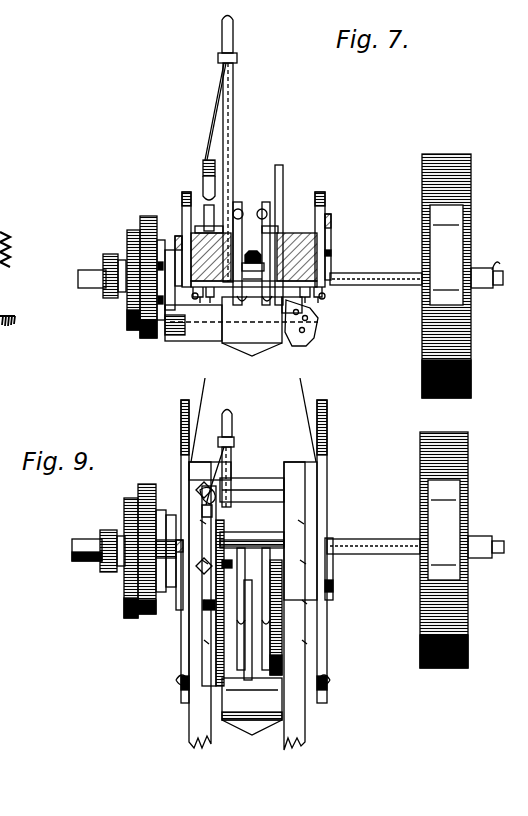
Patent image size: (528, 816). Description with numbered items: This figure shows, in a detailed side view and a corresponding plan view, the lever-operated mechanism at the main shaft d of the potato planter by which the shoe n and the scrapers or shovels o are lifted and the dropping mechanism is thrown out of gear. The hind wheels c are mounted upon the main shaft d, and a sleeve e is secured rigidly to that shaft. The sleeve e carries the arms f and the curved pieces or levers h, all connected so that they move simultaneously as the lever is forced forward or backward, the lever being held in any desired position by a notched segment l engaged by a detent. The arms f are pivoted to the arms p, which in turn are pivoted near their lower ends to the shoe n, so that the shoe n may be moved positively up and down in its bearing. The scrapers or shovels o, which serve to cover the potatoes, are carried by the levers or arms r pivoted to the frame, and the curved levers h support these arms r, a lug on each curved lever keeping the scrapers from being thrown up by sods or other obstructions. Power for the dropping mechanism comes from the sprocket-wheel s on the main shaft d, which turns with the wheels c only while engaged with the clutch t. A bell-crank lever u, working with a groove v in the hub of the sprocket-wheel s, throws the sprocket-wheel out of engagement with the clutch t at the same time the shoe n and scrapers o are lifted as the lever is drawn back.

In FIG. 7, the hind wheels c is at (446, 276).
In FIG. 9, the hind wheels c is at (444, 550).
In FIG. 7, the main shaft d is at (398, 278).
In FIG. 9, the main shaft d is at (88, 540).
In FIG. 7, the clutch t is at (110, 262).
In FIG. 9, the clutch t is at (106, 570).
In FIG. 7, the sprocket-wheel s is at (130, 318).
In FIG. 9, the sprocket-wheel s is at (142, 492).
In FIG. 7, the bell-crank lever u is at (150, 340).
In FIG. 7, the groove v is at (166, 271).
In FIG. 9, the groove v is at (158, 590).
In FIG. 7, the curved pieces or levers h is at (177, 236).
In FIG. 9, the curved pieces or levers h is at (180, 592).
In FIG. 7, the levers or arms r is at (184, 194).
In FIG. 9, the levers or arms r is at (184, 662).
In FIG. 7, the frame bar a is at (318, 262).
In FIG. 9, the frame bar a is at (253, 606).
In FIG. 7, the segment l is at (216, 210).
In FIG. 9, the segment l is at (214, 540).
In FIG. 7, the shoe n is at (241, 326).
In FIG. 9, the shoe n is at (252, 706).
In FIG. 7, the scrapers or shovels o is at (318, 326).
In FIG. 9, the scrapers or shovels o is at (203, 392).
In FIG. 9, the sleeve e is at (258, 540).
In FIG. 9, the arms f is at (236, 608).
In FIG. 9, the arms p is at (240, 668).